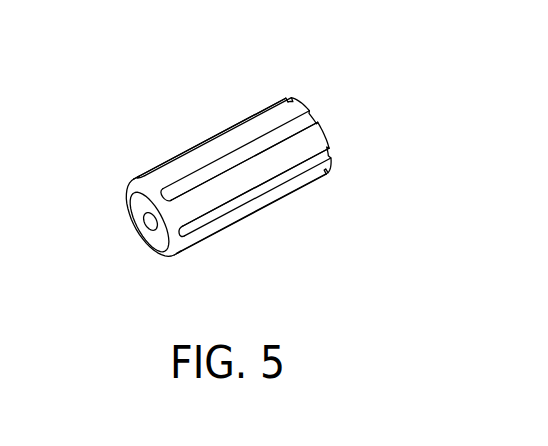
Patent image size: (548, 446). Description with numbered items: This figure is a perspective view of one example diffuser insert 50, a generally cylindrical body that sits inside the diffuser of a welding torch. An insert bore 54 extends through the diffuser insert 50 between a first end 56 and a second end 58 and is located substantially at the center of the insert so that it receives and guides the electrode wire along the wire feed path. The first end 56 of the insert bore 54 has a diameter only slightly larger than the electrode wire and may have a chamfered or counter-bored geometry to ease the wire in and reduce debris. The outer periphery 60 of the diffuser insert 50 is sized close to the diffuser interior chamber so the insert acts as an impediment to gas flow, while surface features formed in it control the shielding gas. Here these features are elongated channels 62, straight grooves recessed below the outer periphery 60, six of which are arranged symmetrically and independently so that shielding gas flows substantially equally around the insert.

The diffuser insert 50 is at (267, 172).
The insert bore 54 is at (150, 230).
The first end 56 is at (272, 95).
The second end 58 is at (120, 192).
The outer periphery 60 is at (312, 137).
The elongated channel 62 is at (288, 127).